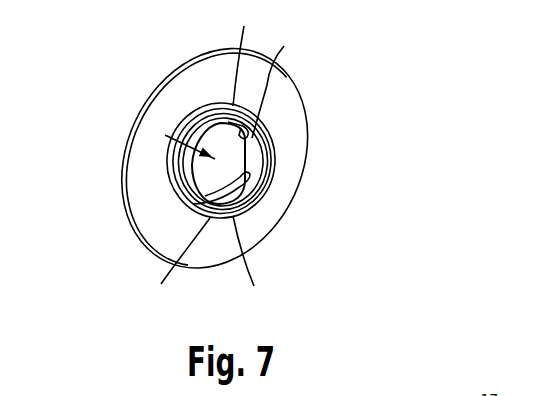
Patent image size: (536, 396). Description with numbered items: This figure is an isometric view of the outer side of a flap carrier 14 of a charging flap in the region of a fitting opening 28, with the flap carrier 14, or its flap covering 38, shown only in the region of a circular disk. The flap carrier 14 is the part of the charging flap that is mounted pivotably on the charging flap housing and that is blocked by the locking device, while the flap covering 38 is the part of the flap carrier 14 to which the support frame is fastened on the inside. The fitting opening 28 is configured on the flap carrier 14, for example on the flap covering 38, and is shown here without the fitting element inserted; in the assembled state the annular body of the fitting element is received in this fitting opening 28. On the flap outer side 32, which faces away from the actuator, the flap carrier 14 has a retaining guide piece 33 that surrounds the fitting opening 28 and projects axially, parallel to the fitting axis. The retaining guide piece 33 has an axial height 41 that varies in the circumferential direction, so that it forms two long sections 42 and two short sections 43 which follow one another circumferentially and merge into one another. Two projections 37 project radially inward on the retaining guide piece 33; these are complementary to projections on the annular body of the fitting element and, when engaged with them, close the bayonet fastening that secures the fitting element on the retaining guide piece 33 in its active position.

The flap carrier 14 is at (293, 88).
The fitting opening 28 is at (204, 126).
The flap outer side 32 is at (263, 210).
The retaining guide piece 33 is at (172, 174).
The projections 37 is at (270, 168).
The flap covering 38 is at (248, 133).
The axial height 41 is at (192, 138).
The long sections 42 is at (183, 190).
The short sections 43 is at (191, 153).